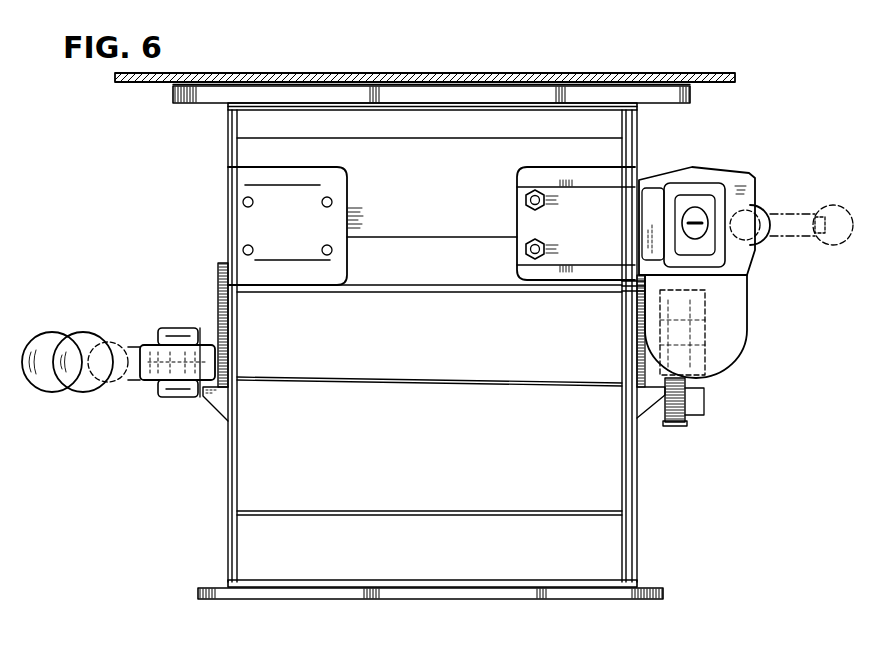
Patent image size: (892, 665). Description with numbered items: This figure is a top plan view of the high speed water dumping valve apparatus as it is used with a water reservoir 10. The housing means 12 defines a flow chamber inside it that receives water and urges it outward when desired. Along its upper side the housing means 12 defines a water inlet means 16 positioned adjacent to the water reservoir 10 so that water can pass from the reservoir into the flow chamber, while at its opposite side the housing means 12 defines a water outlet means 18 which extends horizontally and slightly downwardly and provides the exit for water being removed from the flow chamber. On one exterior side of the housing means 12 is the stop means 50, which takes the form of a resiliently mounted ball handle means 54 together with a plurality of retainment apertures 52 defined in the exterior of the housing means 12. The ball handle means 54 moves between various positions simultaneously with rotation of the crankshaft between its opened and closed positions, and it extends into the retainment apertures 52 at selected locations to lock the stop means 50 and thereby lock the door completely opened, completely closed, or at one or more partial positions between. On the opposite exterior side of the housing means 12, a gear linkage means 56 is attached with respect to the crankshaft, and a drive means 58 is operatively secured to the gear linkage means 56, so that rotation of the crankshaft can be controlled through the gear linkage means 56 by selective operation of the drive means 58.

The water reservoir 10 is at (710, 83).
The housing means 12 is at (228, 146).
The water inlet means 16 is at (540, 94).
The water outlet means 18 is at (533, 599).
The stop means 50 is at (165, 340).
The retainment apertures 52 is at (232, 336).
The resiliently mounted ball handle means 54 is at (80, 340).
The gear linkage means 56 is at (682, 424).
The drive means 58 is at (750, 176).